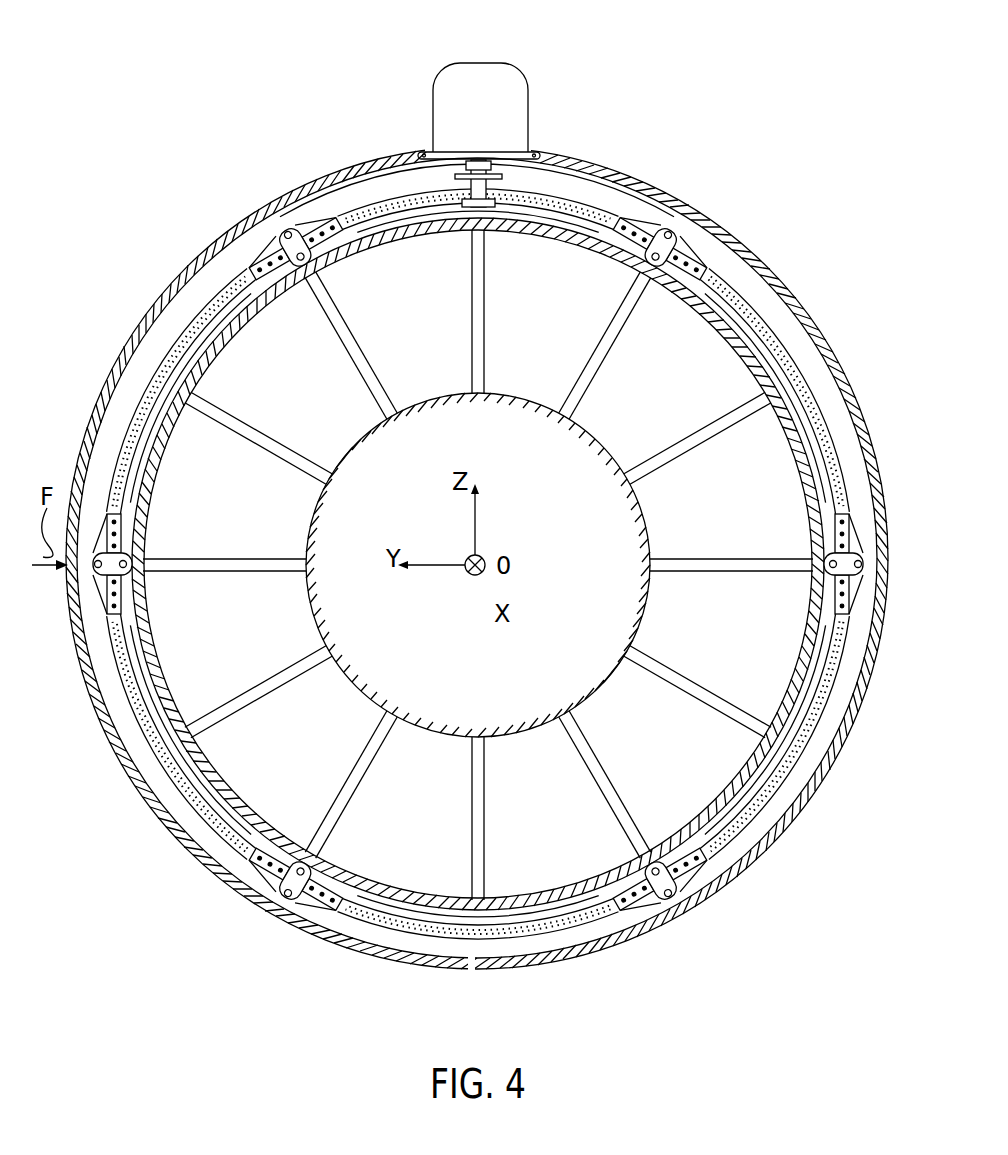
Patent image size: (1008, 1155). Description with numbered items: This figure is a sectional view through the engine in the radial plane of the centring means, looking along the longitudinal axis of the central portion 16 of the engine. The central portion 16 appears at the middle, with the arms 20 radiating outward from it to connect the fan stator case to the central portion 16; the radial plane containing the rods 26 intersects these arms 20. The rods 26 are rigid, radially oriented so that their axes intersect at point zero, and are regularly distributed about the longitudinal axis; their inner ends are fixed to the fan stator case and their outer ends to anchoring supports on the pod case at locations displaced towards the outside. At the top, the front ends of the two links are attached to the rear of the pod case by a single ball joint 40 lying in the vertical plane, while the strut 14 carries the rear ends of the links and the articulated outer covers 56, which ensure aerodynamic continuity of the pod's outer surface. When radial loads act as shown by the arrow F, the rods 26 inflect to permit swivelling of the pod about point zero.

The strut 14 is at (474, 78).
The ball joint 40 is at (497, 162).
The rods 26 is at (668, 234).
The outer covers 56 is at (826, 340).
The arms 20 is at (388, 396).
The central portion 16 is at (530, 400).